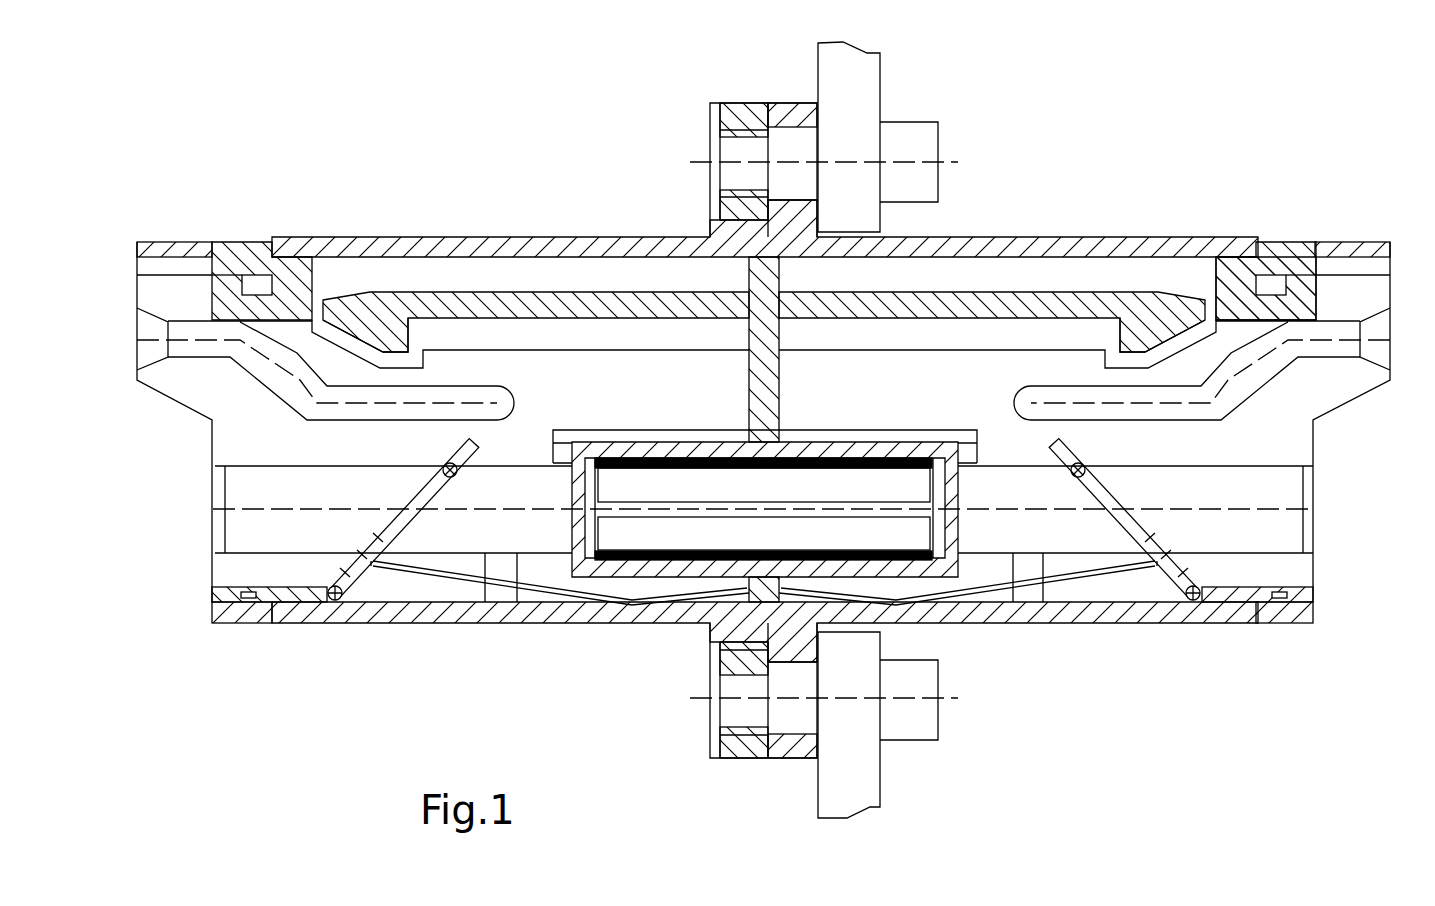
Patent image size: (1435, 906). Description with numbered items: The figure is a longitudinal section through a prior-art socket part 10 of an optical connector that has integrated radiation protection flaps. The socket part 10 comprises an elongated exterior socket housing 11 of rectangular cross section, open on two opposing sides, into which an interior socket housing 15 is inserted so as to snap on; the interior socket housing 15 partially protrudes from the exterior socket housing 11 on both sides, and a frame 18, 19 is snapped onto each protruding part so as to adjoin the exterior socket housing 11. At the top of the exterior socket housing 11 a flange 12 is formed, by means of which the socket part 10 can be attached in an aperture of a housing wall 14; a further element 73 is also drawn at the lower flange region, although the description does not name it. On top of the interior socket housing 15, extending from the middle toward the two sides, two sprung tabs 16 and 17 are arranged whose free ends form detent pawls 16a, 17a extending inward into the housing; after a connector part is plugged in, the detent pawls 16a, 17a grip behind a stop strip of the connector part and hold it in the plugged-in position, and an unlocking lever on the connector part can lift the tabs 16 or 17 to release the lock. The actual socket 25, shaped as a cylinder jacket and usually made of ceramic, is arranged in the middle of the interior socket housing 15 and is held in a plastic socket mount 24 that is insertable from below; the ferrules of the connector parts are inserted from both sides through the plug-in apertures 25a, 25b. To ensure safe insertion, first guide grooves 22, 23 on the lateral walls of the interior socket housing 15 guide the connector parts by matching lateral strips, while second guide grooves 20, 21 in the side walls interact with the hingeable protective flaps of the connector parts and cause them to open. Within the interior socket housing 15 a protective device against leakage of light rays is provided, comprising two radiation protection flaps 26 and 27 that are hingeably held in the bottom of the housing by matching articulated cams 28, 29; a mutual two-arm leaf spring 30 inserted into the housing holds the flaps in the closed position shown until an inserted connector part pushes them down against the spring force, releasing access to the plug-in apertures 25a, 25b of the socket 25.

The socket part 10 is at (1068, 713).
The exterior socket housing 11 is at (460, 247).
The flange 12 is at (795, 108).
The housing wall 14 is at (868, 82).
The interior socket housing 15 is at (1217, 282).
The sprung tab 16 is at (583, 305).
The detent pawl 16a is at (378, 320).
The sprung tab 17 is at (1000, 300).
The detent pawl 17a is at (1148, 313).
The frame 18 is at (237, 262).
The frame 19 is at (1276, 256).
The second guide groove 20 is at (202, 348).
The second guide groove 21 is at (1326, 348).
The first guide groove 22 is at (252, 532).
The first guide groove 23 is at (1282, 533).
The socket mount 24 is at (625, 567).
The socket 25 is at (888, 533).
The plug-in aperture 25a is at (568, 492).
The plug-in aperture 25b is at (960, 492).
The radiation protection flap 26 is at (403, 523).
The radiation protection flap 27 is at (1130, 522).
The articulated cam 28 is at (330, 602).
The articulated cam 29 is at (1197, 602).
The two-arm leaf spring 30 is at (527, 587).
The lower flange 73 is at (797, 747).